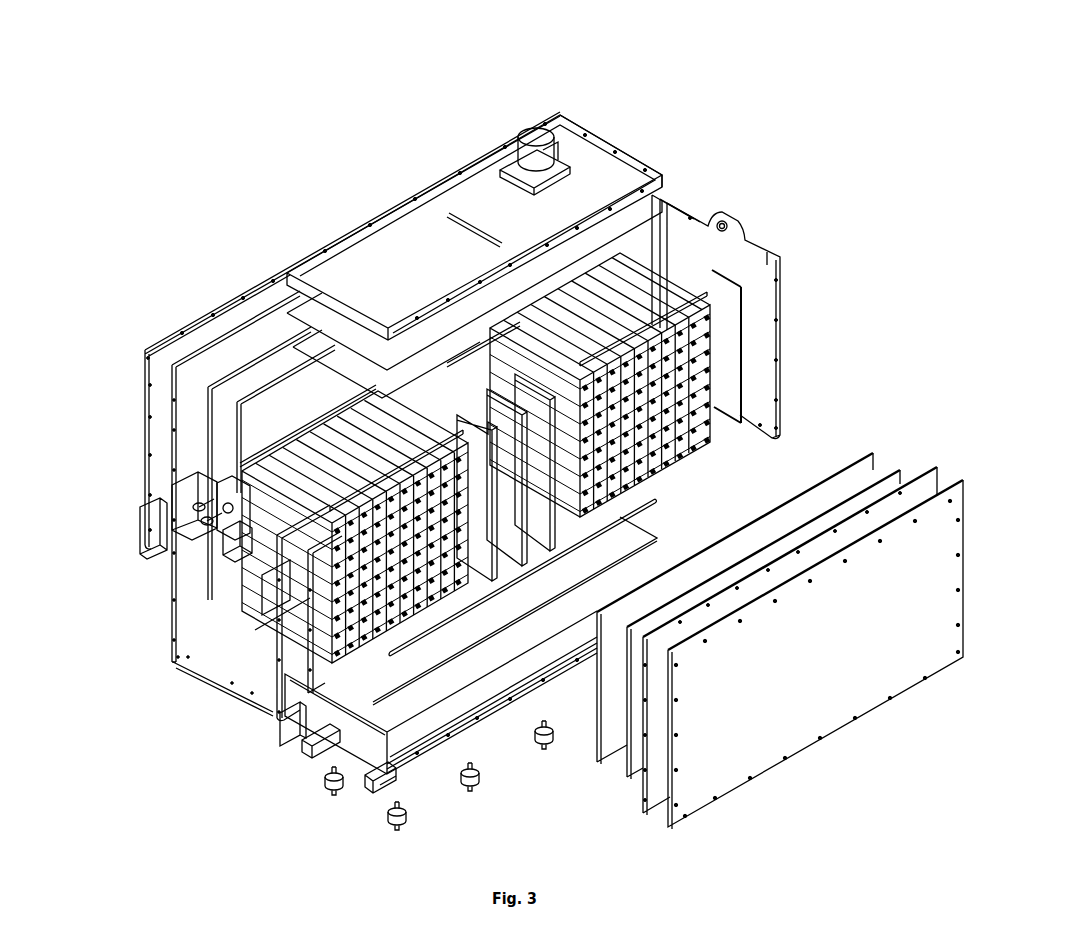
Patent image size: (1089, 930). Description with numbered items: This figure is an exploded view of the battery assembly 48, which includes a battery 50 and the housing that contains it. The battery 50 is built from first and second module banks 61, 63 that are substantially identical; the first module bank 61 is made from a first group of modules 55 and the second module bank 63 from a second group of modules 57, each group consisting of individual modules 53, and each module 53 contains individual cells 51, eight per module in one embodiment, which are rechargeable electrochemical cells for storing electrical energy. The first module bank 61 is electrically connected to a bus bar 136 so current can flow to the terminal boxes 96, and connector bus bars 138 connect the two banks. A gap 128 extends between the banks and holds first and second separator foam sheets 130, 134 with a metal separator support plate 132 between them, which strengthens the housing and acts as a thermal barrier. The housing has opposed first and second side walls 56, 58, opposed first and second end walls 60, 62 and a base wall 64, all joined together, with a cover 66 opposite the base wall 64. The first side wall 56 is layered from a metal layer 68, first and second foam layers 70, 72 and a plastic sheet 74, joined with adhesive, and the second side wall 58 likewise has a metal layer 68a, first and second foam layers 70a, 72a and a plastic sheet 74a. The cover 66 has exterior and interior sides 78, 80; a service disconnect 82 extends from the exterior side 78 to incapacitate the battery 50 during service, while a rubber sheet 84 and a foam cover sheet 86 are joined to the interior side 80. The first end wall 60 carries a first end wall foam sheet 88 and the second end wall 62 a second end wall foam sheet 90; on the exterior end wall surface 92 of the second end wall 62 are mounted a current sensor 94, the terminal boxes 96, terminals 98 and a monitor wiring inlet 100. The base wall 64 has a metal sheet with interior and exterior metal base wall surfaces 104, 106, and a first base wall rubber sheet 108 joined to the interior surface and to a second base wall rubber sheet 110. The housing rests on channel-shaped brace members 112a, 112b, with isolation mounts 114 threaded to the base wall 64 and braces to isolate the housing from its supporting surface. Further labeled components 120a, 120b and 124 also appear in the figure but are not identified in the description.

The battery assembly 48 is at (882, 287).
The battery 50 is at (663, 105).
The cells 51 is at (715, 336).
The modules 53 is at (714, 356).
The first group of modules 55 is at (233, 681).
The first side wall 56 is at (975, 386).
The second group of modules 57 is at (714, 314).
The second side wall 58 is at (210, 308).
The first end wall 60 is at (782, 282).
The first module bank 61 is at (233, 352).
The second end wall 62 is at (192, 670).
The second module bank 63 is at (588, 347).
The base wall 64 is at (428, 744).
The housing cover 66 is at (460, 172).
The metal layer 68 is at (966, 482).
The metal layer 68a is at (250, 290).
The first foam layer 70 is at (938, 466).
The first foam layer 70a is at (172, 383).
The second foam layer 72 is at (901, 468).
The second foam layer 72a is at (207, 422).
The plastic sheet 74 is at (873, 450).
The plastic sheet 74a is at (234, 440).
The exterior side 78 is at (580, 150).
The interior side 80 is at (652, 162).
The service disconnect 82 is at (525, 150).
The rubber sheet 84 is at (652, 200).
The foam cover sheet 86 is at (682, 226).
The first end wall foam sheet 88 is at (743, 365).
The second end wall foam sheet 90 is at (298, 697).
The exterior end wall surface 92 is at (305, 600).
The current sensor 94 is at (220, 542).
The terminal boxes 96 is at (177, 490).
The terminals 98 is at (168, 500).
The monitor wiring inlet 100 is at (225, 522).
The interior metal base wall surface 104 is at (365, 765).
The exterior metal base wall surface 106 is at (355, 735).
The first base wall rubber sheet 108 is at (439, 707).
The second base wall rubber sheet 110 is at (464, 657).
The brace member 112a is at (377, 792).
The brace member 112b is at (313, 760).
The isolation mounts 114 is at (405, 832).
The first battery module 120a is at (716, 396).
The second battery module 120b is at (315, 635).
The module tie rod 124 is at (709, 443).
The gap 128 is at (567, 535).
The first separator foam sheet 130 is at (499, 512).
The separator support plate 132 is at (529, 490).
The second separator foam sheet 134 is at (692, 462).
The bus bar 136 is at (423, 445).
The connector bus bars 138 is at (472, 615).